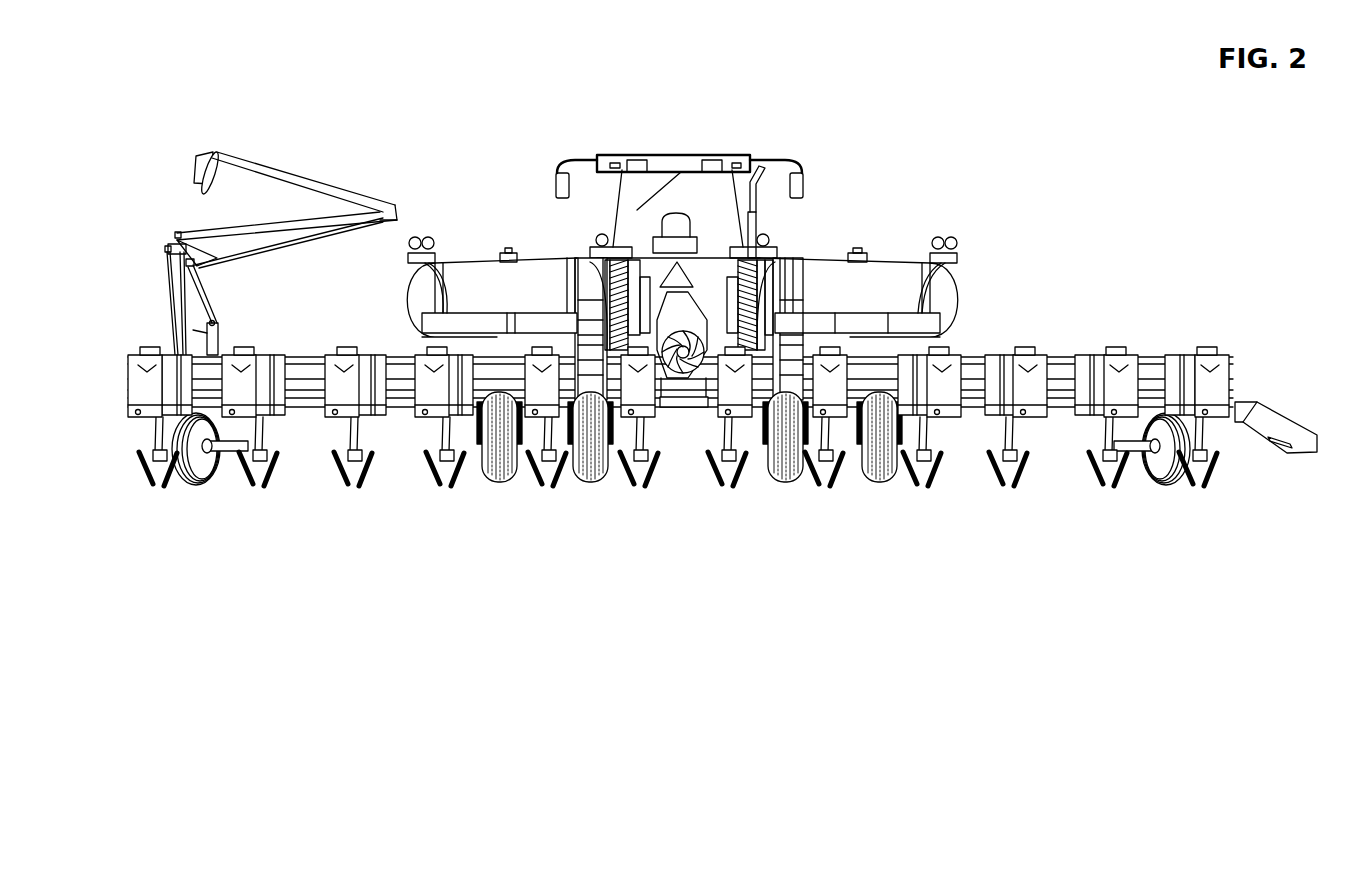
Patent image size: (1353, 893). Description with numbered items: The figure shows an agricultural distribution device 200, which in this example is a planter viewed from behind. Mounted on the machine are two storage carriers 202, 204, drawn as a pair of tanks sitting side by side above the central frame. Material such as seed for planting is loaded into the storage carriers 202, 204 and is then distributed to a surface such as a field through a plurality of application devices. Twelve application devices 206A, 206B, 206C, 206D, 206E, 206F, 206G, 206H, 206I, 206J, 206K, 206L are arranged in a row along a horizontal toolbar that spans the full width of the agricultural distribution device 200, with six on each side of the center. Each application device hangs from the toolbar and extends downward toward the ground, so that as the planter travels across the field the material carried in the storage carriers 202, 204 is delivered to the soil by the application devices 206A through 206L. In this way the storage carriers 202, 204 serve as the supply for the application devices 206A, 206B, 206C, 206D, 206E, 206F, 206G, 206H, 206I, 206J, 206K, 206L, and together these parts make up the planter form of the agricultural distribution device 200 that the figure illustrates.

The agricultural distribution device 200 is at (887, 110).
The storage carrier 202 is at (527, 297).
The storage carrier 204 is at (886, 297).
The application device 206A is at (140, 390).
The application device 206B is at (243, 398).
The application device 206C is at (340, 390).
The application device 206D is at (430, 390).
The application device 206E is at (547, 388).
The application device 206F is at (643, 383).
The application device 206G is at (727, 383).
The application device 206H is at (828, 382).
The application device 206I is at (937, 383).
The application device 206J is at (1028, 385).
The application device 206K is at (1125, 388).
The application device 206L is at (1217, 388).